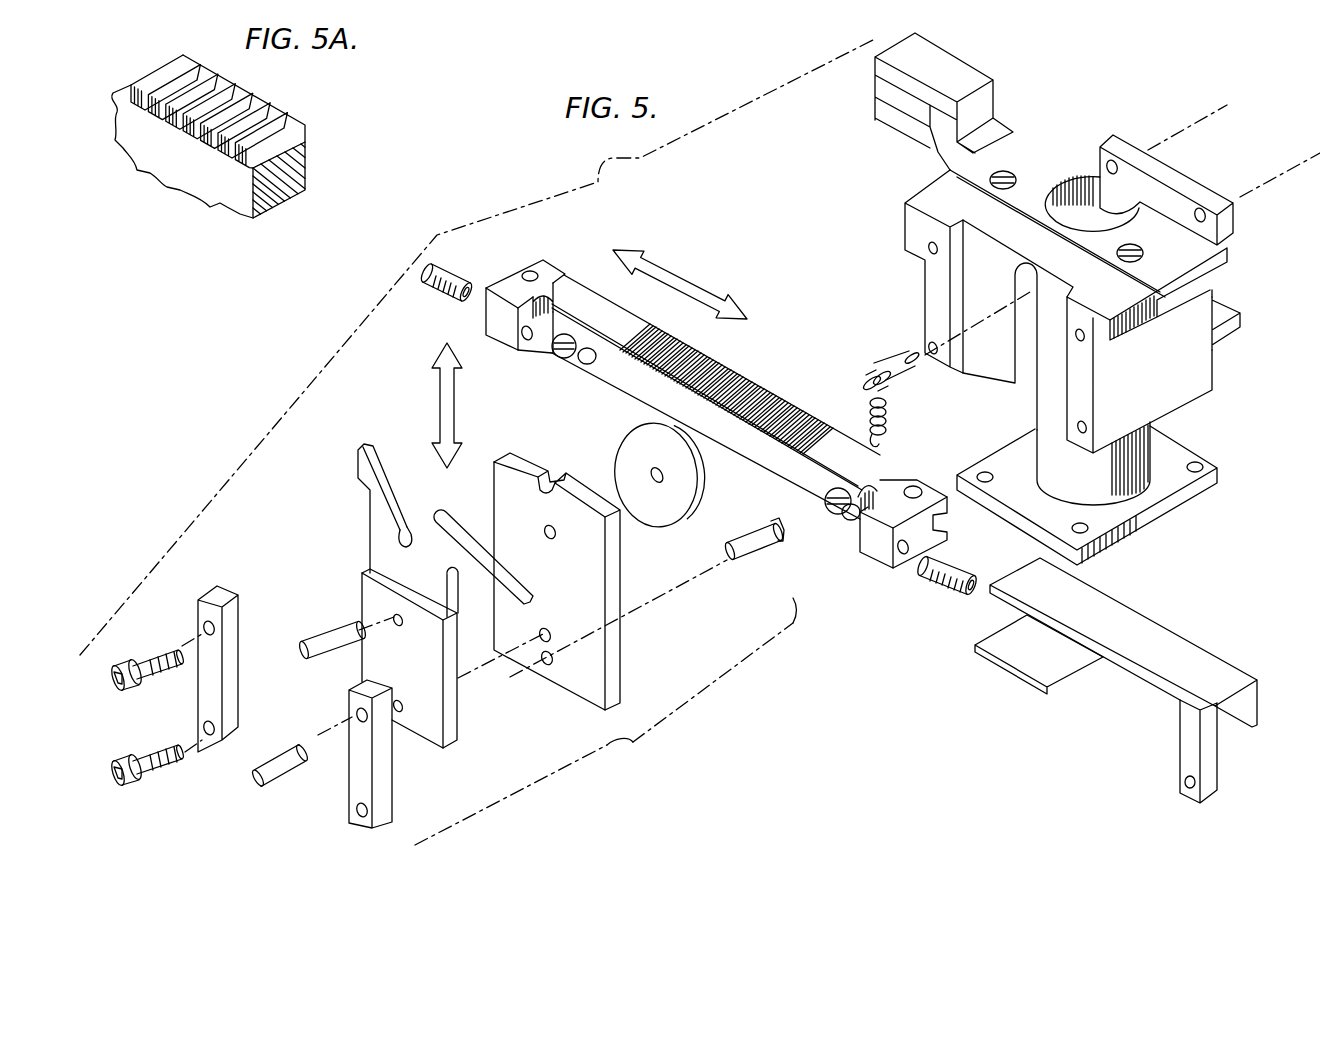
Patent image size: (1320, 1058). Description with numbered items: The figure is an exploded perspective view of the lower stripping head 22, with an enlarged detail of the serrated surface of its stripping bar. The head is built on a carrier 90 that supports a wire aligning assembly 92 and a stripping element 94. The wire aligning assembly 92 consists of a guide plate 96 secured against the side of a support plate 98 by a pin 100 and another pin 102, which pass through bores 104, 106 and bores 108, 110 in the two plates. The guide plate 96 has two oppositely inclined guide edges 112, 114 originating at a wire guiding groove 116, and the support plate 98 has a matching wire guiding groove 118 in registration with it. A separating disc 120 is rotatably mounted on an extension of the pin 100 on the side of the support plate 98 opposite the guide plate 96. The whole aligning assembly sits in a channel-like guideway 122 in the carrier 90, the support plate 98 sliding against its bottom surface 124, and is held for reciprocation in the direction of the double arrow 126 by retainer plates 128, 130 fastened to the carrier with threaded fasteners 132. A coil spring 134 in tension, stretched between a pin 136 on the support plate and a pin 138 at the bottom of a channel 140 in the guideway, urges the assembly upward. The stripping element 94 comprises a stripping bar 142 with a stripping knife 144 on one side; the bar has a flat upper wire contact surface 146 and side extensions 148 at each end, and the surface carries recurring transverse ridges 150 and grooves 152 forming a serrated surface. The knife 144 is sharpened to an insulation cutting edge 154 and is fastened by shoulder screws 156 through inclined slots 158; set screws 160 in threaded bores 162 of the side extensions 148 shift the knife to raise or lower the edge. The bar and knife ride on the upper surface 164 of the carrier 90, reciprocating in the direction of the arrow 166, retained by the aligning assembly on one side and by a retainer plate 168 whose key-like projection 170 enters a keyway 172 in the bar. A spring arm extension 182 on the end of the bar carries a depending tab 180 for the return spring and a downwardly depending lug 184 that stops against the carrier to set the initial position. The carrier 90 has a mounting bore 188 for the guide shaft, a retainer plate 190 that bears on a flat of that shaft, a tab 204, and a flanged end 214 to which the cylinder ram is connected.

In FIG. 5, the lower stripping head 22 is at (640, 158).
In FIG. 5, the carrier 90 is at (1183, 371).
In FIG. 5, the wire aligning assembly 92 is at (633, 742).
In FIG. 5, the stripping element 94 is at (716, 397).
In FIG. 5, the guide plate 96 is at (421, 615).
In FIG. 5, the support plate 98 is at (582, 569).
In FIG. 5, the pin 100 is at (328, 644).
In FIG. 5, the pin 102 is at (292, 783).
In FIG. 5, the bore 104 is at (398, 624).
In FIG. 5, the bore 106 is at (547, 540).
In FIG. 5, the bore 108 is at (398, 712).
In FIG. 5, the bore 110 is at (552, 637).
In FIG. 5, the guide edge 112 is at (390, 505).
In FIG. 5, the guide edge 114 is at (437, 522).
In FIG. 5, the wire guiding groove 116 is at (411, 532).
In FIG. 5, the wire guiding groove 118 is at (566, 474).
In FIG. 5, the separating disc 120 is at (647, 513).
In FIG. 5, the guideway 122 is at (997, 358).
In FIG. 5, the bottom surface 124 is at (972, 285).
In FIG. 5, the double arrow 126 is at (439, 401).
In FIG. 5, the retainer plate 128 is at (218, 752).
In FIG. 5, the retainer plate 130 is at (356, 832).
In FIG. 5, the threaded fasteners 132 is at (178, 752).
In FIG. 5, the coil spring 134 is at (870, 412).
In FIG. 5, the pin 136 is at (752, 560).
In FIG. 5, the pin 138 is at (893, 360).
In FIG. 5, the channel 140 is at (1027, 370).
In FIG. 5A, the stripping bar 142 is at (282, 199).
In FIG. 5, the stripping bar 142 is at (740, 370).
In FIG. 5, the stripping knife 144 is at (768, 477).
In FIG. 5, the wire contact surface 146 is at (599, 338).
In FIG. 5, the side extensions 148 is at (503, 311).
In FIG. 5A, the ridges 150 is at (250, 100).
In FIG. 5A, the grooves 152 is at (212, 140).
In FIG. 5, the insulation cutting edge 154 is at (578, 322).
In FIG. 5, the shoulder screws 156 is at (821, 502).
In FIG. 5, the inclined slots 158 is at (842, 512).
In FIG. 5, the set screws 160 is at (466, 282).
In FIG. 5, the threaded bores 162 is at (528, 333).
In FIG. 5, the upper surface 164 is at (940, 205).
In FIG. 5, the arrow 166 is at (693, 285).
In FIG. 5, the retainer plate 168 is at (1102, 229).
In FIG. 5, the key-like projection 170 is at (1091, 260).
In FIG. 5, the keyway 172 is at (948, 515).
In FIG. 5, the depending tab 180 is at (1200, 750).
In FIG. 5, the spring arm extension 182 is at (1099, 680).
In FIG. 5, the lug 184 is at (973, 660).
In FIG. 5, the mounting bore 188 is at (1066, 203).
In FIG. 5, the retainer plate 190 is at (1183, 178).
In FIG. 5, the tab 204 is at (1235, 323).
In FIG. 5, the flanged end 214 is at (1168, 513).